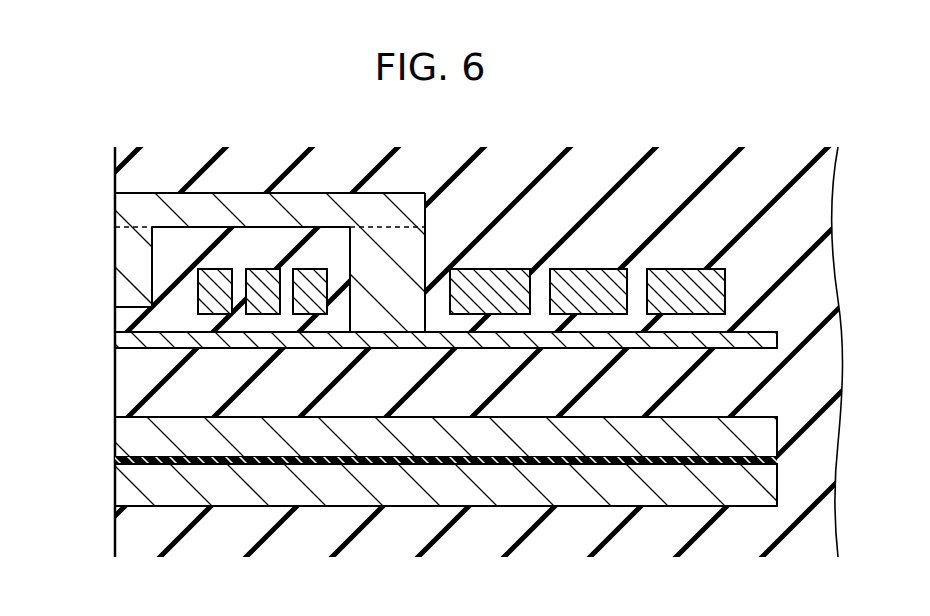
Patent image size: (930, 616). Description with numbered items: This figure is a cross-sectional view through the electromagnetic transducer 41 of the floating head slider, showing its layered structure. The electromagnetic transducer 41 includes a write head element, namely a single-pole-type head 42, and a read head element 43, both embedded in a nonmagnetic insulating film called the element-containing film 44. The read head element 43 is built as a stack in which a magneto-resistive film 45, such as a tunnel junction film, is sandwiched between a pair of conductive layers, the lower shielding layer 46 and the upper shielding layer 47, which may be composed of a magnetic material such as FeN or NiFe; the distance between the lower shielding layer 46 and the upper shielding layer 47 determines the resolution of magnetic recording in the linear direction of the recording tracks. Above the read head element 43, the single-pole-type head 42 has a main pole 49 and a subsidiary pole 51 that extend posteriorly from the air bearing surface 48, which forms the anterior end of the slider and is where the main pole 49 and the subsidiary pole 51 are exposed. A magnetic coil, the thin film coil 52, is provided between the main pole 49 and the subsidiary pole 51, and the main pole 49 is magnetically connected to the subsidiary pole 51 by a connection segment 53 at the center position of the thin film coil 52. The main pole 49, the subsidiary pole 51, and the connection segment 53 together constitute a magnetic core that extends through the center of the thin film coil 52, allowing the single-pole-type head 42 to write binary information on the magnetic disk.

The electromagnetic transducer 41 is at (153, 147).
The single-pole-type head 42 is at (405, 308).
The read head element 43 is at (465, 308).
The element-containing film 44 is at (116, 372).
The magneto-resistive film 45 is at (116, 460).
The lower shielding layer 46 is at (767, 486).
The upper shielding layer 47 is at (767, 434).
The air bearing surface 48 is at (116, 546).
The main pole 49 is at (116, 338).
The subsidiary pole 51 is at (290, 193).
The thin film coil 52 is at (665, 268).
The connection segment 53 is at (421, 243).